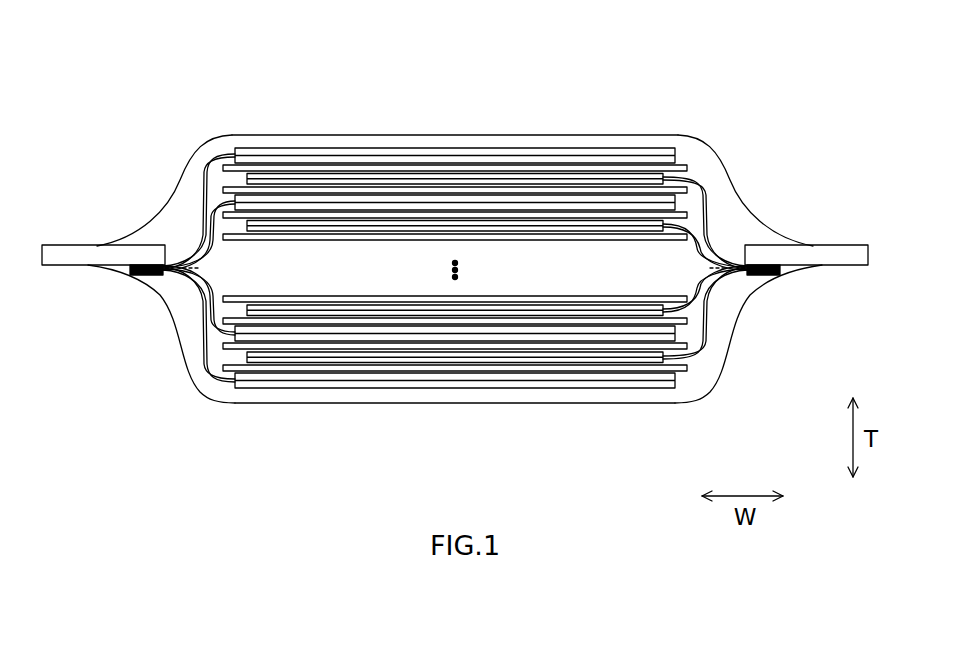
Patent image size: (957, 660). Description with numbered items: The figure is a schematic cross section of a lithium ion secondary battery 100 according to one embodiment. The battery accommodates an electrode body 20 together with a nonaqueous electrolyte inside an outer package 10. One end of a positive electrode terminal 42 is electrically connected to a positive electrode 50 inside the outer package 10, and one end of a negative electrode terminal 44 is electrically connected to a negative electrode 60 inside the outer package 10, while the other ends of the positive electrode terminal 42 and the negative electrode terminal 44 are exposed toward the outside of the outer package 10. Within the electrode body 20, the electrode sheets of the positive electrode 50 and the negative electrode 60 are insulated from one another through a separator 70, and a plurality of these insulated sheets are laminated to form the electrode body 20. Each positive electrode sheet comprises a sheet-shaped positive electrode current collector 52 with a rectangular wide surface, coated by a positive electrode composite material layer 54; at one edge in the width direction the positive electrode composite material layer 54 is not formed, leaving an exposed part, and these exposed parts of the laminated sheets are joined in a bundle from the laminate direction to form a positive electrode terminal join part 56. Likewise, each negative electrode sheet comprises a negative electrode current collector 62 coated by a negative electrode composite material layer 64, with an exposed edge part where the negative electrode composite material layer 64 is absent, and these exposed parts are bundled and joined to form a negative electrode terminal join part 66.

The lithium ion secondary battery 100 is at (655, 61).
The outer package 10 is at (334, 134).
The electrode body 20 is at (549, 392).
The positive electrode terminal 42 is at (75, 244).
The negative electrode terminal 44 is at (845, 244).
The positive electrode 50 is at (120, 135).
The positive electrode current collector 52 is at (205, 188).
The positive electrode composite material layer 54 is at (228, 149).
The positive electrode terminal join part 56 is at (158, 278).
The negative electrode 60 is at (794, 128).
The negative electrode current collector 62 is at (708, 197).
The negative electrode composite material layer 64 is at (690, 173).
The negative electrode terminal join part 66 is at (752, 278).
The separator 70 is at (407, 193).